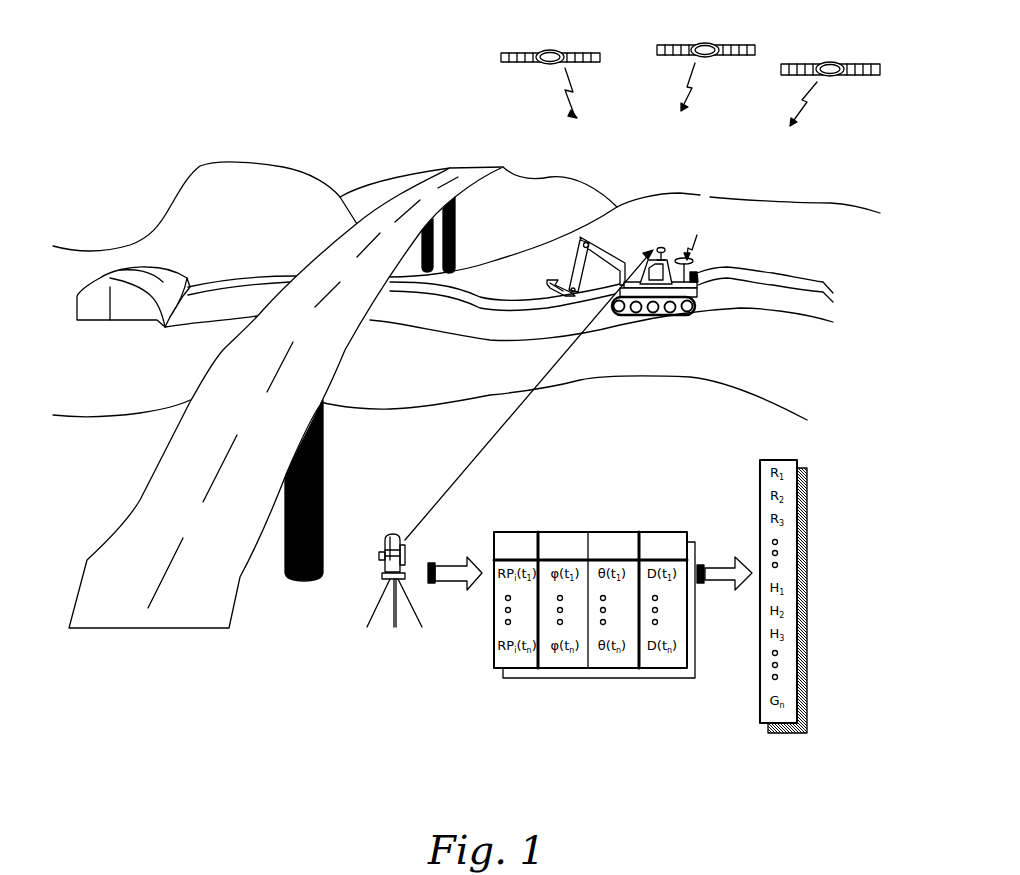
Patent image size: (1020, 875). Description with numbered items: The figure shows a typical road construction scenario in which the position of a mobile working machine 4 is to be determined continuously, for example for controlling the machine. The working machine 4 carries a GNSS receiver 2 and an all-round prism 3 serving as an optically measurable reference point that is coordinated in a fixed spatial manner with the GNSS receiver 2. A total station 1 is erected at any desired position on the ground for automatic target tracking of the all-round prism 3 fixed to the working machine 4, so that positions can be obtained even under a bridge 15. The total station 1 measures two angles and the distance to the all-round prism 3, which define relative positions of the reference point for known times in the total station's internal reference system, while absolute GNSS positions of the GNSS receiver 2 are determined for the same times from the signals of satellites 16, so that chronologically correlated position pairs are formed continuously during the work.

The total station 1 is at (392, 622).
The GNSS receiver 2 is at (695, 260).
The all-round prism 3 is at (662, 247).
The mobile working machine 4 is at (678, 313).
The bridge 15 is at (373, 220).
The satellites 16 is at (541, 54).